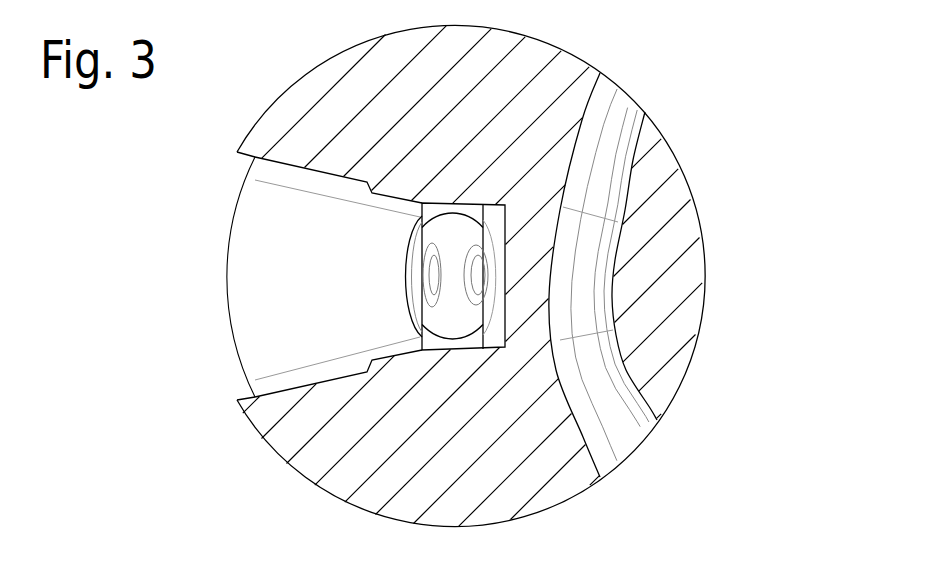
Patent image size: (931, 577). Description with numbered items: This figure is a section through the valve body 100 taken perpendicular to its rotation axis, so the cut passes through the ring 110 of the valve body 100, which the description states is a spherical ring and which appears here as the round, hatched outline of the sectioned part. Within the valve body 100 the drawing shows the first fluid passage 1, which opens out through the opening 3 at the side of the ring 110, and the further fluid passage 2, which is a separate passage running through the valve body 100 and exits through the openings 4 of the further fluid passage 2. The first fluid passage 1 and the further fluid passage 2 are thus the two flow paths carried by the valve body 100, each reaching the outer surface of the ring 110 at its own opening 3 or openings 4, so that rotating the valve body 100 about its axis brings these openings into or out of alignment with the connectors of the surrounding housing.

The first fluid passage 1 is at (336, 296).
The further fluid passage 2 is at (582, 288).
The opening of the first fluid passage 3 is at (242, 271).
The opening of the further fluid passage 4 is at (622, 103).
The valve body 100 is at (100, 276).
The ring 110 is at (703, 247).